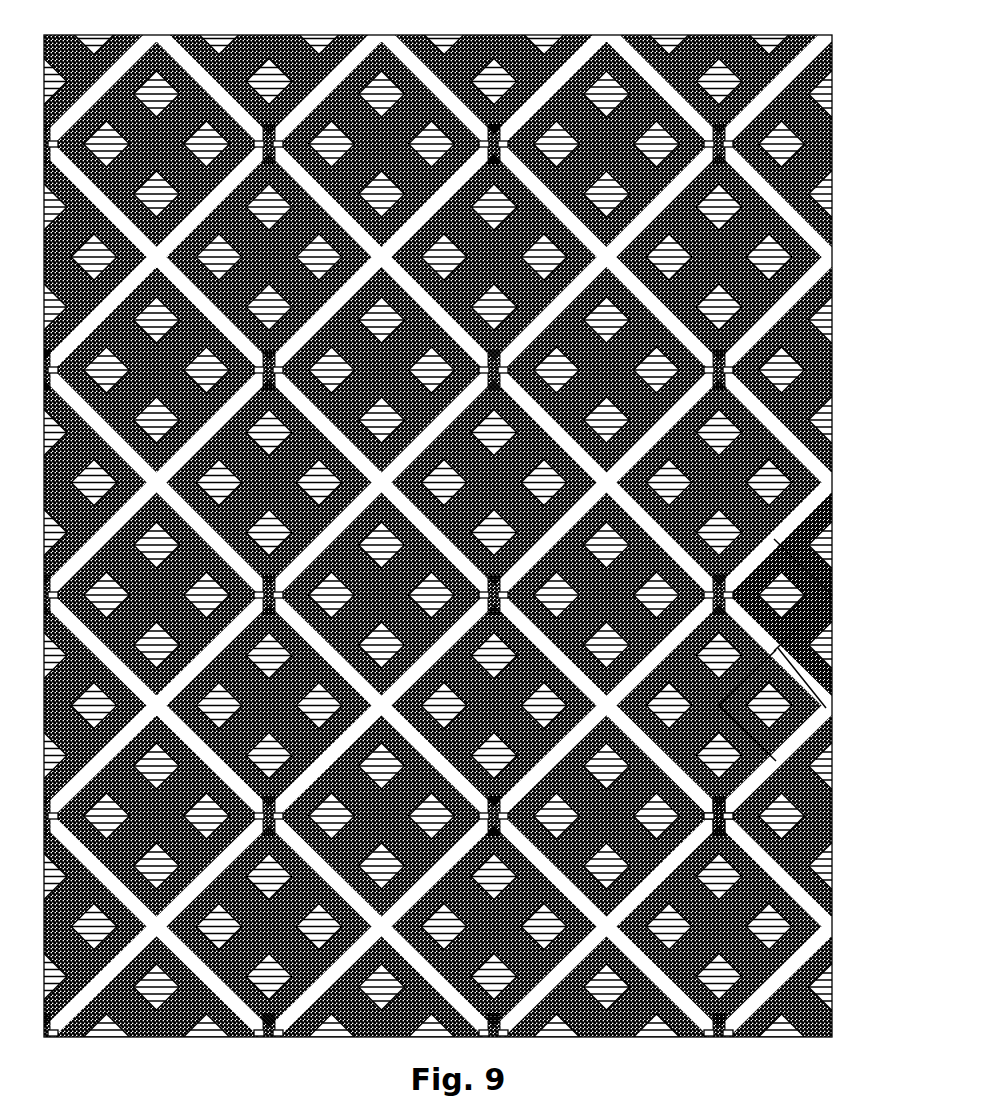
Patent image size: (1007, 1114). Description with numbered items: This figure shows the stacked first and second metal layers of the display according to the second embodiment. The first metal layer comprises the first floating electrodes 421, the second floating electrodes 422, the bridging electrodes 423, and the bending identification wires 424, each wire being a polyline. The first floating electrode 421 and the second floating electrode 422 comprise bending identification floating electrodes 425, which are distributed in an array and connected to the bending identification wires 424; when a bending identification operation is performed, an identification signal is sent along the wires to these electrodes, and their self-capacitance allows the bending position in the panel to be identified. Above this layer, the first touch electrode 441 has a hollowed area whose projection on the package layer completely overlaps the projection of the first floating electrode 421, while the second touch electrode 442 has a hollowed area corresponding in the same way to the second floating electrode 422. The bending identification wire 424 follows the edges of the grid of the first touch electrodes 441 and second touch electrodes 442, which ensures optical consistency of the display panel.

The first floating electrode 421 is at (792, 541).
The second floating electrode 422 is at (764, 483).
The bridging electrode 423 is at (732, 816).
The bending identification wire 424 is at (792, 711).
The bending identification floating electrode 425 is at (795, 372).
The first touch electrode 441 is at (816, 584).
The second touch electrode 442 is at (770, 667).